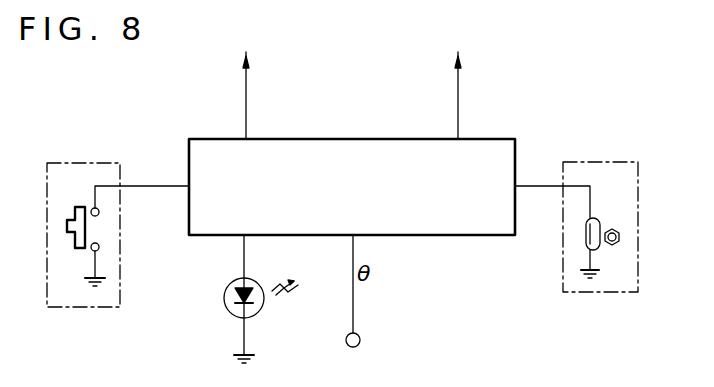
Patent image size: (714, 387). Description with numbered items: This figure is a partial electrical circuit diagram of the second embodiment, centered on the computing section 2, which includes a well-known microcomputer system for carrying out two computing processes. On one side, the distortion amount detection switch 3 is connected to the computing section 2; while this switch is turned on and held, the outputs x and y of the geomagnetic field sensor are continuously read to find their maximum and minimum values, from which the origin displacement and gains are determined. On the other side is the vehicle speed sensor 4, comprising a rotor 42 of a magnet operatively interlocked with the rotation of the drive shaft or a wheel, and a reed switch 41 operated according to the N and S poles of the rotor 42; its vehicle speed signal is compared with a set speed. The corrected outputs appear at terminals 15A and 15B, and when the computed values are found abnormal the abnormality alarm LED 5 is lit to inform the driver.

The computing section 2 is at (496, 124).
The distortion amount detection switch 3 is at (103, 150).
The vehicle speed sensor 4 is at (610, 162).
The abnormality alarm LED 5 is at (230, 283).
The x output terminal 15A is at (476, 82).
The y output terminal 15B is at (263, 82).
The reed switch 41 is at (600, 226).
The rotor 42 is at (617, 245).